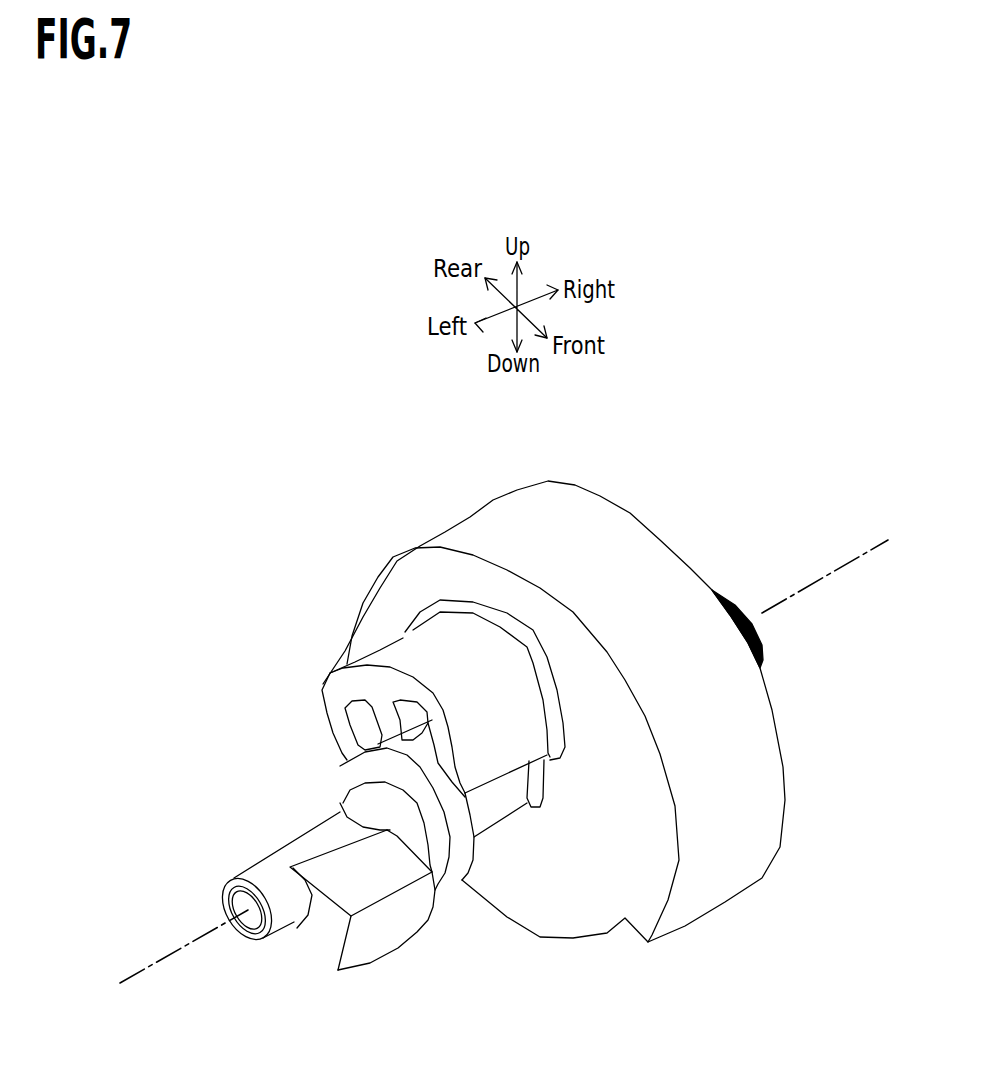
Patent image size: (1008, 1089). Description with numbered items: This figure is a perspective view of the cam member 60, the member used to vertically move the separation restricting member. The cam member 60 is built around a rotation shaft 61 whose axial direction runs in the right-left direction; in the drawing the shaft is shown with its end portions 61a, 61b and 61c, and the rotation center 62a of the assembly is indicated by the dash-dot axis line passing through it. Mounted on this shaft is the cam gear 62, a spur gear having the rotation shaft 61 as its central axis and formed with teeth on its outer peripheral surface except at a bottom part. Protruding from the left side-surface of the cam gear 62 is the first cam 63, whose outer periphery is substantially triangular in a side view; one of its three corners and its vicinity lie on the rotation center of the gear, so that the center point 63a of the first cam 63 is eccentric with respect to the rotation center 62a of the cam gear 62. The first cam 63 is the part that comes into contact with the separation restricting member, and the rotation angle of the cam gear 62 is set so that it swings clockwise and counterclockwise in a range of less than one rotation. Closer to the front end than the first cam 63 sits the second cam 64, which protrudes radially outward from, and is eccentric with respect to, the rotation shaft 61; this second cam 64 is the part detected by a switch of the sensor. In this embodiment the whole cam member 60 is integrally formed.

The cam member 60 is at (434, 514).
The rotation shaft 61 is at (772, 638).
The knob portion 61a is at (735, 613).
The flange portion 61b is at (368, 800).
The tube portion 61c is at (267, 873).
The cam gear 62 is at (590, 535).
The rotation center 62a is at (182, 947).
The first cam 63 is at (407, 657).
The center point 63a is at (388, 718).
The second cam 64 is at (383, 927).